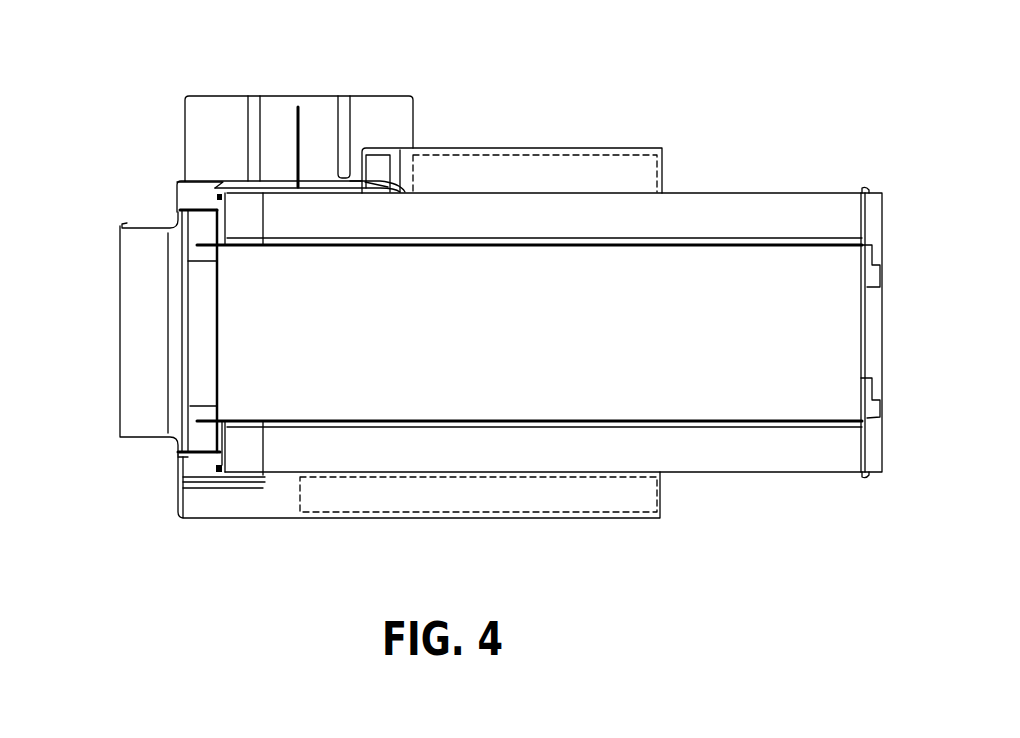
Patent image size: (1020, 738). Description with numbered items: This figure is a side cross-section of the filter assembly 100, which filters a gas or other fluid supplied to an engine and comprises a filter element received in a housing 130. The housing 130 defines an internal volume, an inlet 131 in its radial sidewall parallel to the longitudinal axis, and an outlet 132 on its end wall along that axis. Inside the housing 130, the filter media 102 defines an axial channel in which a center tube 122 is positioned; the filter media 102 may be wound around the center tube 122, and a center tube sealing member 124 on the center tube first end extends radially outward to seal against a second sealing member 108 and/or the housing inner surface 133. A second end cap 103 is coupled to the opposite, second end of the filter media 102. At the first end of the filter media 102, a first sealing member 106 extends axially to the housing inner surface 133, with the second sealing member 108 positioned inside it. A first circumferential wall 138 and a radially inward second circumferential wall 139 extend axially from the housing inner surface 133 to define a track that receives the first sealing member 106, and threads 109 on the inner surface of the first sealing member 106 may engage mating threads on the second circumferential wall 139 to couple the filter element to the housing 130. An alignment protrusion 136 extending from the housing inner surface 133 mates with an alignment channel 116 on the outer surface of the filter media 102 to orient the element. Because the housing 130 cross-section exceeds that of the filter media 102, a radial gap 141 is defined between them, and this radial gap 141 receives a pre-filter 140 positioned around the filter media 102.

The filter assembly 100 is at (712, 79).
The filter media 102 is at (752, 193).
The second end cap 103 is at (875, 218).
The first sealing member 106 is at (197, 478).
The second sealing member 108 is at (220, 474).
The threads 109 is at (195, 468).
The alignment channel 116 is at (403, 167).
The center tube 122 is at (729, 405).
The center tube sealing member 124 is at (205, 443).
The housing 130 is at (523, 138).
The inlet 131 is at (282, 108).
The outlet 132 is at (130, 317).
The housing inner surface 133 is at (190, 209).
The alignment protrusion 136 is at (378, 167).
The first circumferential wall 138 is at (195, 487).
The second circumferential wall 139 is at (186, 455).
The pre-filter 140 is at (618, 152).
The radial gap 141 is at (548, 167).